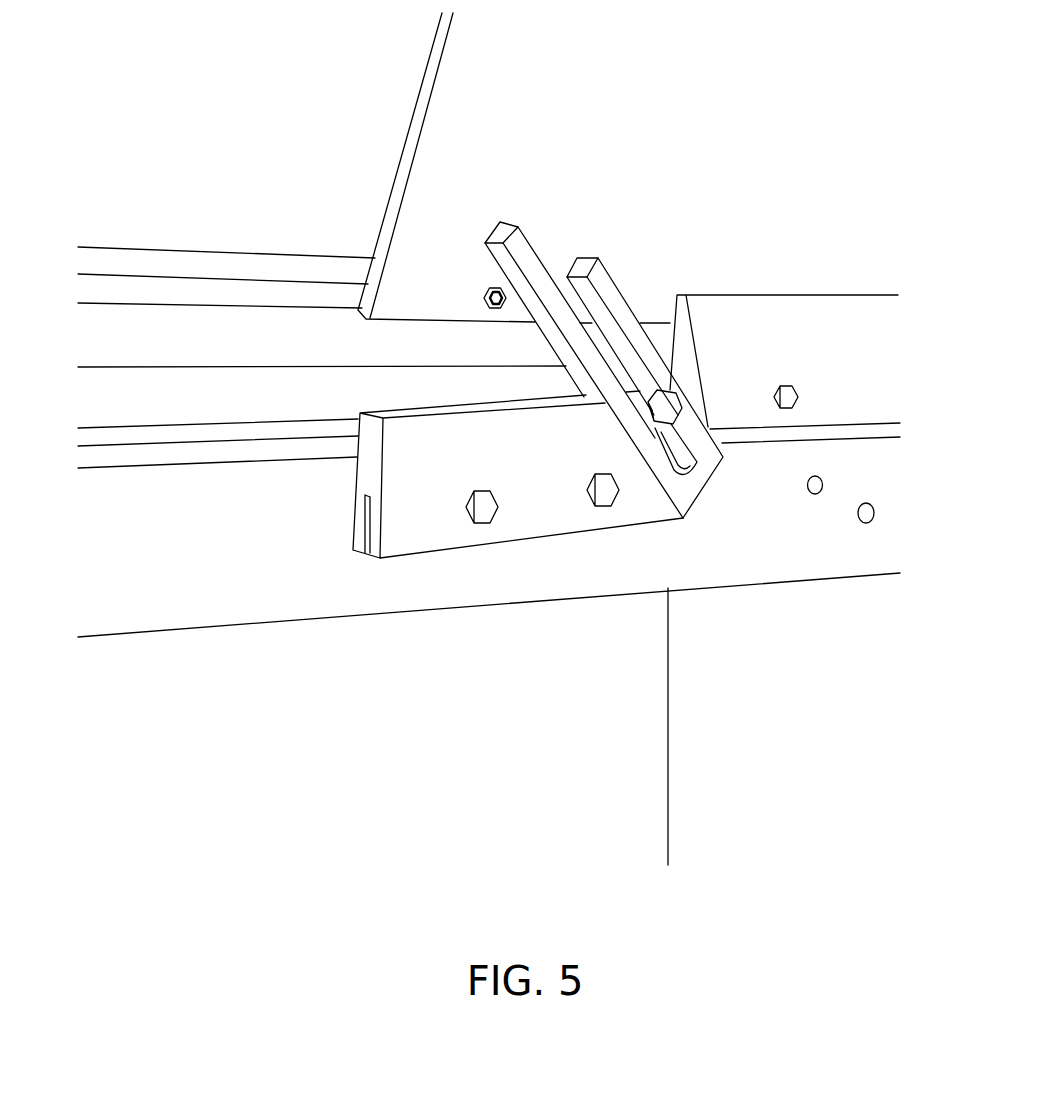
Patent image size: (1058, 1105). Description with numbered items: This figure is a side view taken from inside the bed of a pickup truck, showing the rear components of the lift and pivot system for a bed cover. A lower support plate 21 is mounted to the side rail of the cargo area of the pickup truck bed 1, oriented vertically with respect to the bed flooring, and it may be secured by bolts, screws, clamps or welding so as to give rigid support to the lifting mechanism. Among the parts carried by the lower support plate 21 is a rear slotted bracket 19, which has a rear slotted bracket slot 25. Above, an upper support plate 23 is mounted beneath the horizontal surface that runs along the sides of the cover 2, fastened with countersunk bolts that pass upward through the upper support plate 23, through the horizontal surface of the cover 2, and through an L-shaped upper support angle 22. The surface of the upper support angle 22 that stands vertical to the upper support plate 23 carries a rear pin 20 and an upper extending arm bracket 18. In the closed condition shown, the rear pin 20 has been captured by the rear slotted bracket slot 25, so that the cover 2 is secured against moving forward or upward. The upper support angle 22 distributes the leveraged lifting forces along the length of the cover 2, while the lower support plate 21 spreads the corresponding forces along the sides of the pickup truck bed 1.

The pickup truck bed 1 is at (385, 686).
The cover 2 is at (295, 432).
The upper extending arm bracket 18 is at (758, 338).
The rear slotted bracket 19 is at (517, 472).
The rear pin 20 is at (670, 406).
The lower support plate 21 is at (337, 592).
The upper support angle 22 is at (175, 398).
The upper support plate 23 is at (247, 450).
The rear slotted bracket slot 25 is at (561, 283).